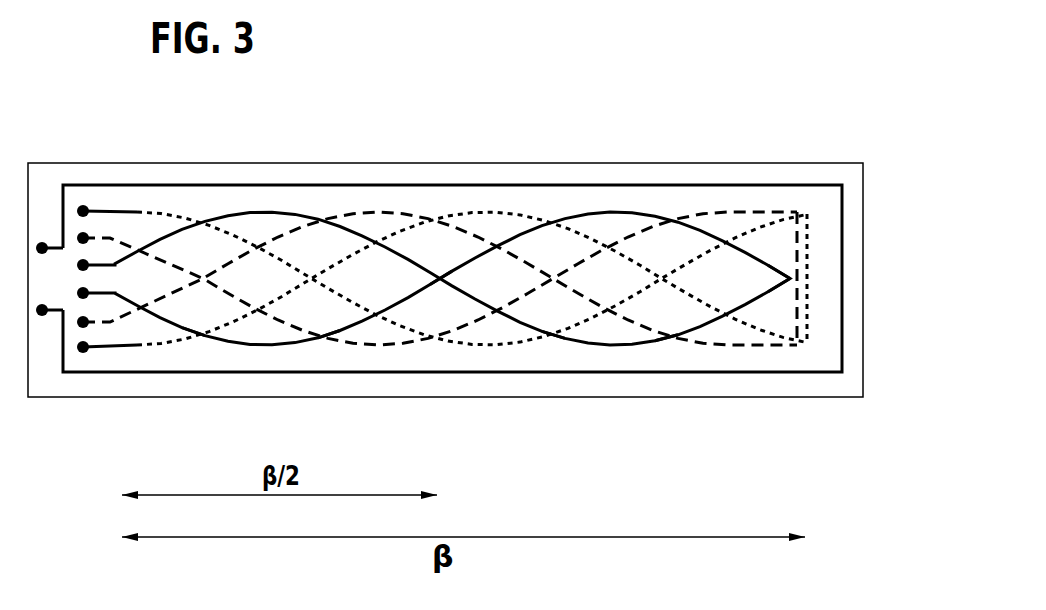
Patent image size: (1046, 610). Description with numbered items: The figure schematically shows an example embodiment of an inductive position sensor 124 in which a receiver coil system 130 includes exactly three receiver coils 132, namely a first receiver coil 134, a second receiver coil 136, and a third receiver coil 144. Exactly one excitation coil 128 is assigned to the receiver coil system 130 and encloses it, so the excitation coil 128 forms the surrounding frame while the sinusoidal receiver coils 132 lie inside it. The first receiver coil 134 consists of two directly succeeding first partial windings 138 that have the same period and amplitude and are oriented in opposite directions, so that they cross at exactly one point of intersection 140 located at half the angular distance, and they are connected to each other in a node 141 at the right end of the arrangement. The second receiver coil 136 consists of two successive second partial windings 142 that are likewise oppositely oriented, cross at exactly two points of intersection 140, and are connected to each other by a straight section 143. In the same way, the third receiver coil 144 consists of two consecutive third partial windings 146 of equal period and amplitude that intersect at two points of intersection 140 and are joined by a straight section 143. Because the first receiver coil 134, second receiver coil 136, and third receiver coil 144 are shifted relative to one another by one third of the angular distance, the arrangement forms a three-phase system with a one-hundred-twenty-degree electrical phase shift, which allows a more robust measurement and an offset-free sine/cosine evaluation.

The inductive position sensor 124 is at (581, 126).
The excitation coil 128 is at (63, 210).
The receiver coil system 130 is at (181, 211).
The receiver coils 132 is at (445, 220).
The first receiver coil 134 is at (436, 221).
The second receiver coil 136 is at (472, 220).
The first partial windings 138 is at (258, 211).
The point of intersection 140 is at (204, 338).
The node 141 is at (788, 276).
The second partial windings 142 is at (490, 210).
The straight section 143 is at (808, 279).
The third receiver coil 144 is at (440, 220).
The third partial windings 146 is at (700, 212).